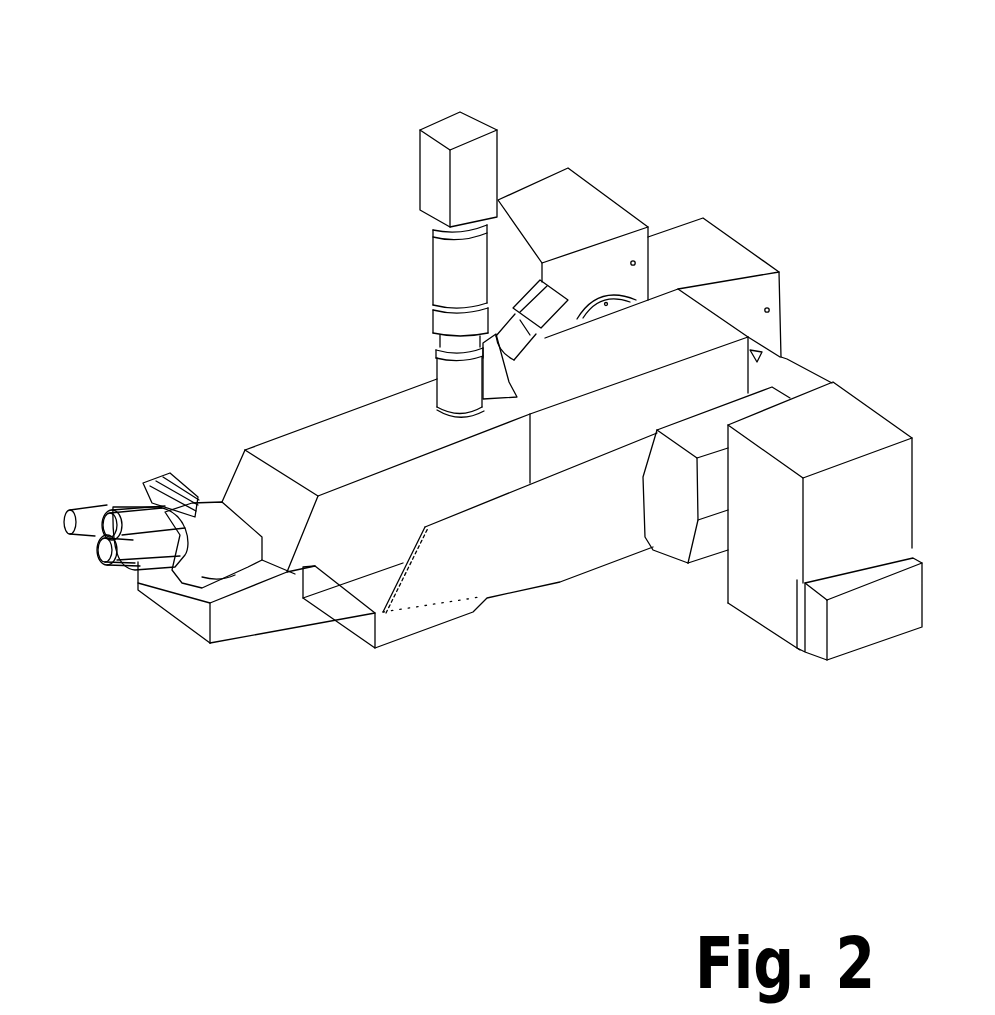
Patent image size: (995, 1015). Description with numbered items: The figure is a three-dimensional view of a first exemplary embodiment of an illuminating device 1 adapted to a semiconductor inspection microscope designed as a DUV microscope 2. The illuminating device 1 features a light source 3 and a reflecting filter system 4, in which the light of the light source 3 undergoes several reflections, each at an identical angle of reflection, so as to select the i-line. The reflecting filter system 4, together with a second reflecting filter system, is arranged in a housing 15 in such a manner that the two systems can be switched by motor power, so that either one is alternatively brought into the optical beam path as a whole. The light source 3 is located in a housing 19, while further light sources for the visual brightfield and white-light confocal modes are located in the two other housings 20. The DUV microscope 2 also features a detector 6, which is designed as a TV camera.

The illuminating device 1 is at (675, 605).
The DUV microscope 2 is at (353, 355).
The light source 3 is at (782, 576).
The reflecting filter system 4 is at (662, 542).
The detector 6 is at (433, 190).
The housing 15 is at (662, 512).
The housing 19 is at (765, 590).
The housings 20 is at (540, 222).